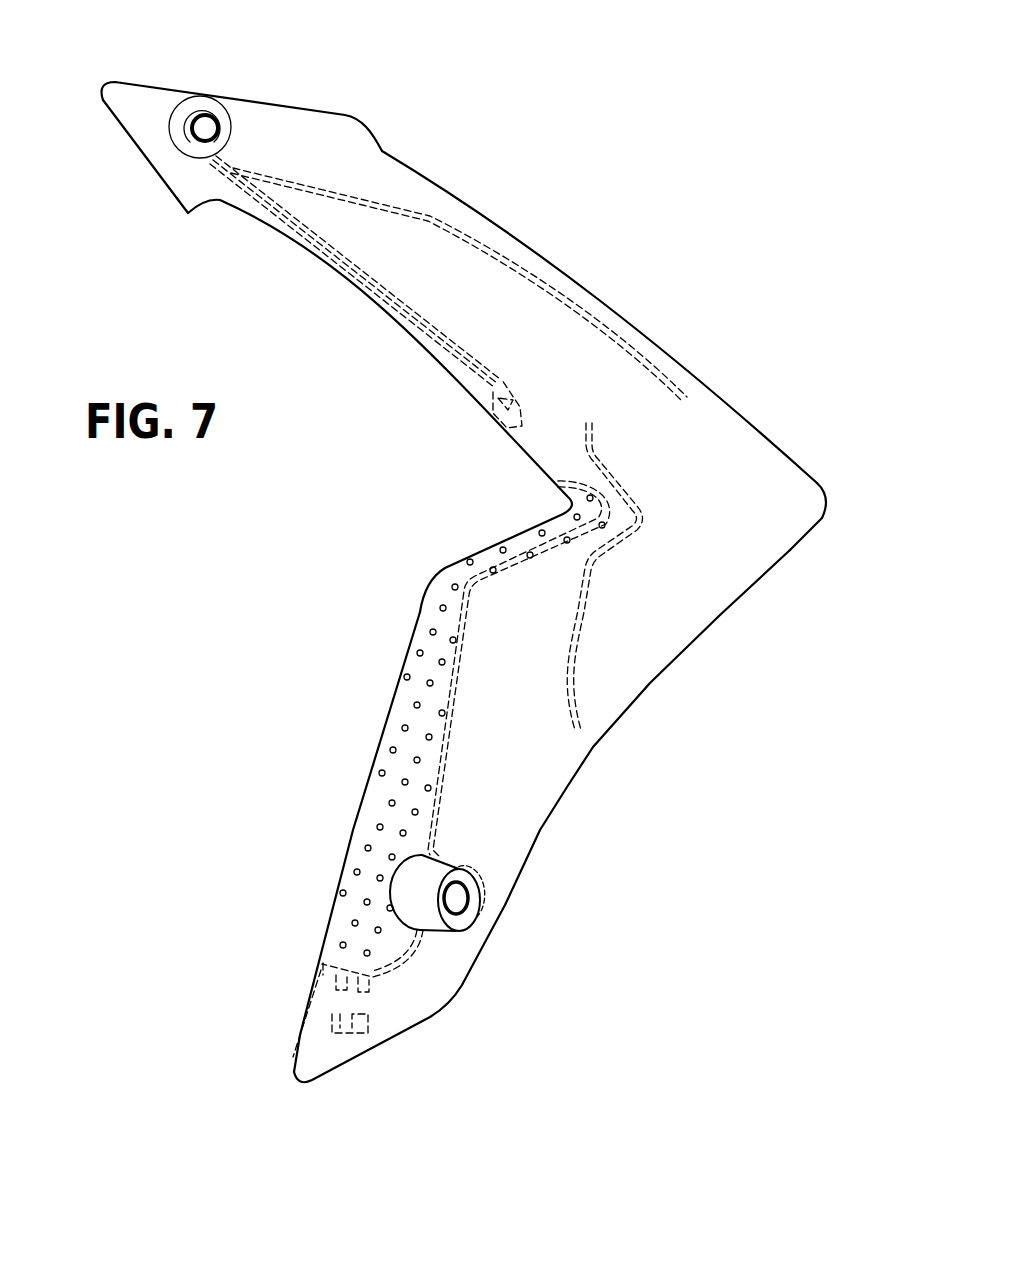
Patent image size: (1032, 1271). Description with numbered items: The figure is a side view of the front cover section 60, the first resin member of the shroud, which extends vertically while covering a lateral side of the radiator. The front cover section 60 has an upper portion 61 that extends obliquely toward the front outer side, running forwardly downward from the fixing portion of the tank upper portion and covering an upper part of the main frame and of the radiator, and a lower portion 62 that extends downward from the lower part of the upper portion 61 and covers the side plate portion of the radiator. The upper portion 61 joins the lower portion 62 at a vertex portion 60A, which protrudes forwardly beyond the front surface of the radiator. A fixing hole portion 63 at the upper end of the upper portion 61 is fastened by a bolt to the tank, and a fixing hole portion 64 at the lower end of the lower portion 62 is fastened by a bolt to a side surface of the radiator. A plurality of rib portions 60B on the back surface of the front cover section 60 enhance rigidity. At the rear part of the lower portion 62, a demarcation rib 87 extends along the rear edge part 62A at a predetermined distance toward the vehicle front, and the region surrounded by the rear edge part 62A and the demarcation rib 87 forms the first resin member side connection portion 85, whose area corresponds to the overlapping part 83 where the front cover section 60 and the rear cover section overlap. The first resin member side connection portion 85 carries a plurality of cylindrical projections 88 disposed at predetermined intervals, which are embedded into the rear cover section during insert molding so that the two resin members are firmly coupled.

The front cover section 60 is at (648, 130).
The vertex portion 60A is at (800, 510).
The rib portions 60B is at (500, 247).
The upper portion 61 is at (532, 312).
The lower portion 62 is at (513, 832).
The rear edge part 62A is at (352, 837).
The fixing hole portion 63 is at (195, 105).
The fixing hole portion 64 is at (452, 915).
The overlapping part 83 is at (372, 748).
The first resin member side connection portion 85 is at (385, 795).
The demarcation rib 87 is at (440, 797).
The projections 88 is at (432, 630).